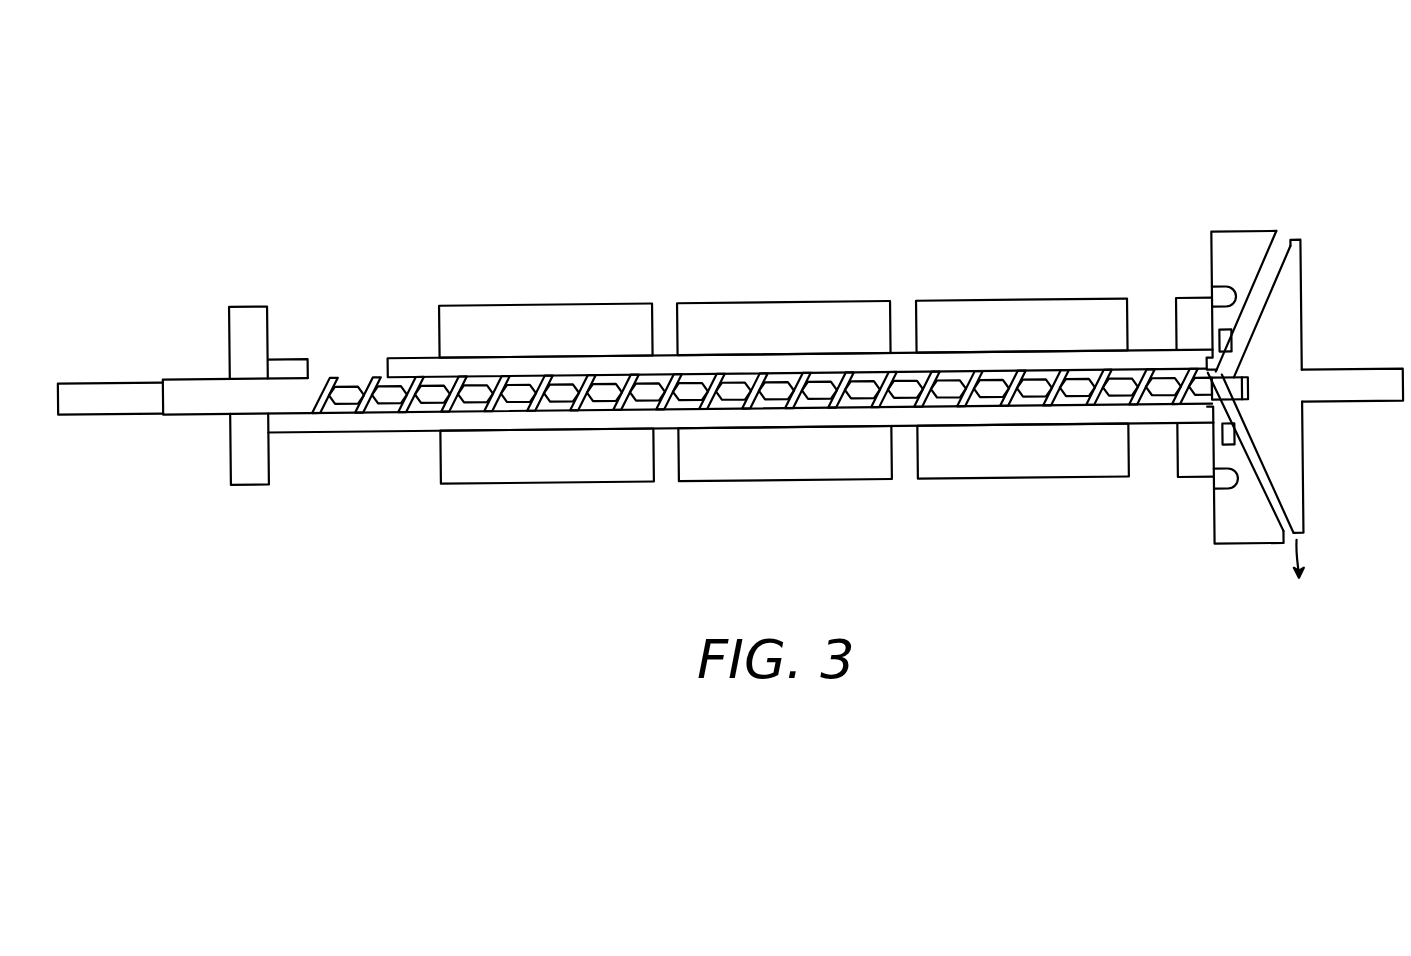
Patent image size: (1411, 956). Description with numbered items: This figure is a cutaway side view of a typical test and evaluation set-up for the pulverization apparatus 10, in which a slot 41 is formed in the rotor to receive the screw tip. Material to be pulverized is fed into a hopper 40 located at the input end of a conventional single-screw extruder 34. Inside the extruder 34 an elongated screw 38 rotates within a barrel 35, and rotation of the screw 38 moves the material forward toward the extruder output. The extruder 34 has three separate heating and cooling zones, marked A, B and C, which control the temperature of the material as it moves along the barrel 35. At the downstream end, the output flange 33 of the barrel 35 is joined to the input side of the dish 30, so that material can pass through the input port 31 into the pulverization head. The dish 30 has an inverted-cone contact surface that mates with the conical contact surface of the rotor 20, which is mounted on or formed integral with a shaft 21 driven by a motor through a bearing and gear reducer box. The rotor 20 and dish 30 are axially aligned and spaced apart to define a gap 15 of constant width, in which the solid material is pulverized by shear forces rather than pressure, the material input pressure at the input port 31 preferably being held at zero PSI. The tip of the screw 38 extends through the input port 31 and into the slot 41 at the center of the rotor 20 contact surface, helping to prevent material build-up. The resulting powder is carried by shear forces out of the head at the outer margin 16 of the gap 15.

The pulverization apparatus 10 is at (1352, 153).
The gap 15 is at (1292, 246).
The outer margin 16 is at (1294, 538).
The rotor 20 is at (1292, 296).
The shaft 21 is at (1335, 385).
The dish 30 is at (1247, 253).
The input port 31 is at (1212, 415).
The output flange 33 is at (1197, 317).
The screw extruder 34 is at (669, 325).
The barrel 35 is at (1144, 364).
The screw 38 is at (199, 397).
The hopper 40 is at (351, 351).
The slot 41 is at (1251, 396).